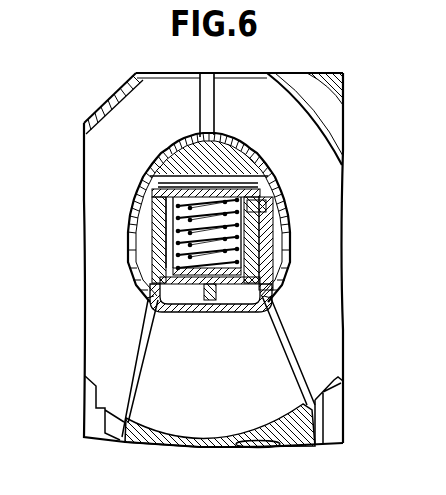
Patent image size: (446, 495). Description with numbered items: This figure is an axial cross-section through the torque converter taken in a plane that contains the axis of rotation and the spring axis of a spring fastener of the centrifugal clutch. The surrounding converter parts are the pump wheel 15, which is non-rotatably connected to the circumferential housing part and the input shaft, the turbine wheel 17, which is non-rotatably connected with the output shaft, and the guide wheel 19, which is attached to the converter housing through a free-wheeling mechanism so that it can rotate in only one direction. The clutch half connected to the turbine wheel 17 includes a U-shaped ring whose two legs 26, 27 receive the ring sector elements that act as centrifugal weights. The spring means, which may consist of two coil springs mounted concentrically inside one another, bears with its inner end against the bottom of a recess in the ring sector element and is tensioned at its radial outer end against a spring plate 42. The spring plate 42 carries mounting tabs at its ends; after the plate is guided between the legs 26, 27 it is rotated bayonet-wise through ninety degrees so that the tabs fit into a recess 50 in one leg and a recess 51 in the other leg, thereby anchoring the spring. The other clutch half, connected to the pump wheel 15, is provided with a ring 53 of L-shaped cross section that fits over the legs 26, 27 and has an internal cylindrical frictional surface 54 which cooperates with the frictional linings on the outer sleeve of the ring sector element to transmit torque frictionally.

The pump wheel 15 is at (105, 233).
The turbine wheel 17 is at (313, 243).
The guide wheel 19 is at (220, 385).
The leg 26 is at (266, 233).
The leg 27 is at (155, 245).
The spring plate 42 is at (261, 153).
The recess 50 is at (267, 210).
The recess 51 is at (157, 210).
The ring 53 is at (221, 165).
The internal cylindrical frictional surface 54 is at (193, 176).